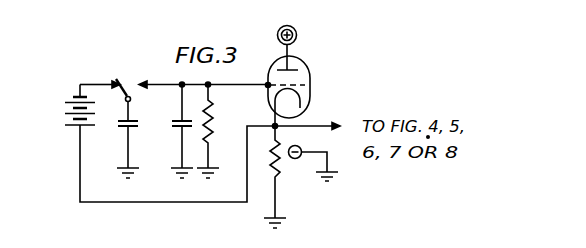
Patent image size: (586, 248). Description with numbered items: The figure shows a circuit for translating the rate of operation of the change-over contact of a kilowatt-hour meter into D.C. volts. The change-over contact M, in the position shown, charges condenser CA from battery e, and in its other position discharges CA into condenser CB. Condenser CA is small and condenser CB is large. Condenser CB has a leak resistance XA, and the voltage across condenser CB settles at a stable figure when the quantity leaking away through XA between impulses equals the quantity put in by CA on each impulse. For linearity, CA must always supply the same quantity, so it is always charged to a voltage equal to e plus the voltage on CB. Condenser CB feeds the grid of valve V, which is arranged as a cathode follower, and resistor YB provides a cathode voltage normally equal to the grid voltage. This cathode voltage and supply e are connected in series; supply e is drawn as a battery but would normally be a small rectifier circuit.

The battery e is at (73, 105).
The change-over contact M is at (126, 91).
The condenser CA is at (134, 149).
The condenser CB is at (174, 132).
The leak resistance XA is at (201, 132).
The valve V is at (294, 76).
The resistor YB is at (301, 177).